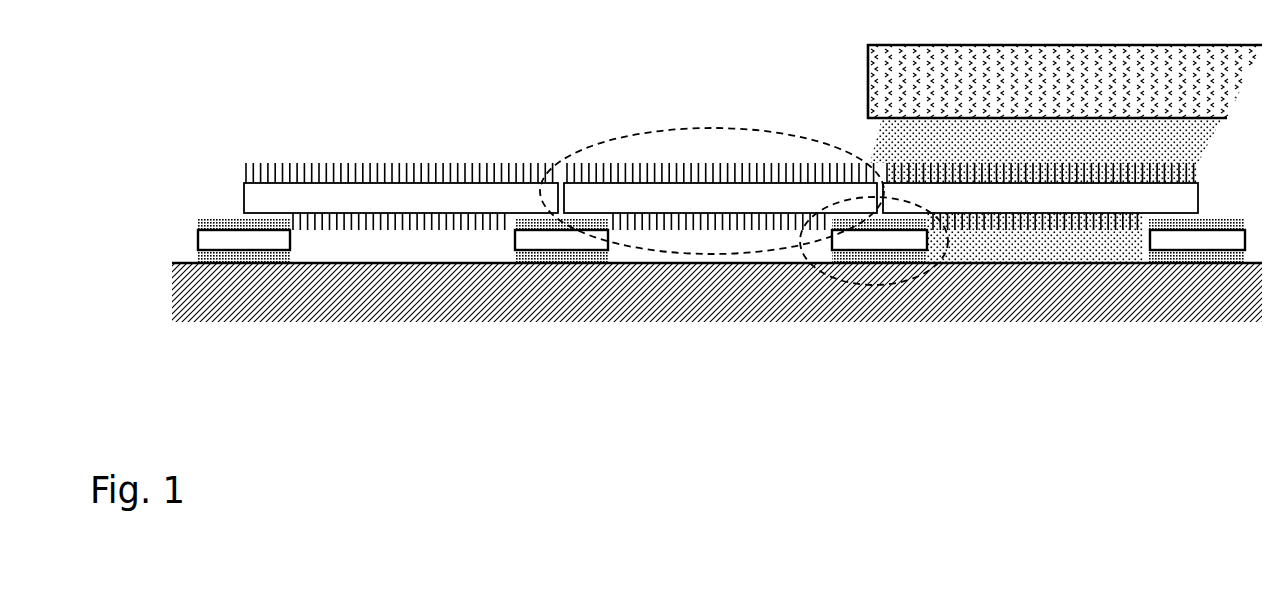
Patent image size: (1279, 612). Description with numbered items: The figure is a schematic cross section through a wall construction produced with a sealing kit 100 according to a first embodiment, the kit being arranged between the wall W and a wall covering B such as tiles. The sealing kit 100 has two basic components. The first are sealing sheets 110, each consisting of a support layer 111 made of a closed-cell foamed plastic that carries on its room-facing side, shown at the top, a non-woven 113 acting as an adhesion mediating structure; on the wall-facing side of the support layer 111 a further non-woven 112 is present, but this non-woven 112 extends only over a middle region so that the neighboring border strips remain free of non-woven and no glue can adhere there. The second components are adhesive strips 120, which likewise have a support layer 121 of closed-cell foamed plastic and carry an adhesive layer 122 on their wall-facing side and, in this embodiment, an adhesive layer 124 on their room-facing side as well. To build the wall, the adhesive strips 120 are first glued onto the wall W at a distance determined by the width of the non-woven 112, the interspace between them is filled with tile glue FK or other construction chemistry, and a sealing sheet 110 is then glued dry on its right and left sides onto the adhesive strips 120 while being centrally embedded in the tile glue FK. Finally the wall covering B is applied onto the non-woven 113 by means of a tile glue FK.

The sealing kit 100 is at (737, 46).
The sealing sheet 110 is at (750, 255).
The support layer 111 is at (397, 198).
The non-woven 112 is at (323, 225).
The non-woven 113 is at (457, 170).
The adhesive strip 120 is at (887, 280).
The support layer 121 is at (202, 240).
The adhesive layer 122 is at (203, 257).
The adhesive layer 124 is at (197, 225).
The tile glue FK is at (1077, 248).
The wall W is at (1205, 303).
The wall covering B is at (1065, 81).